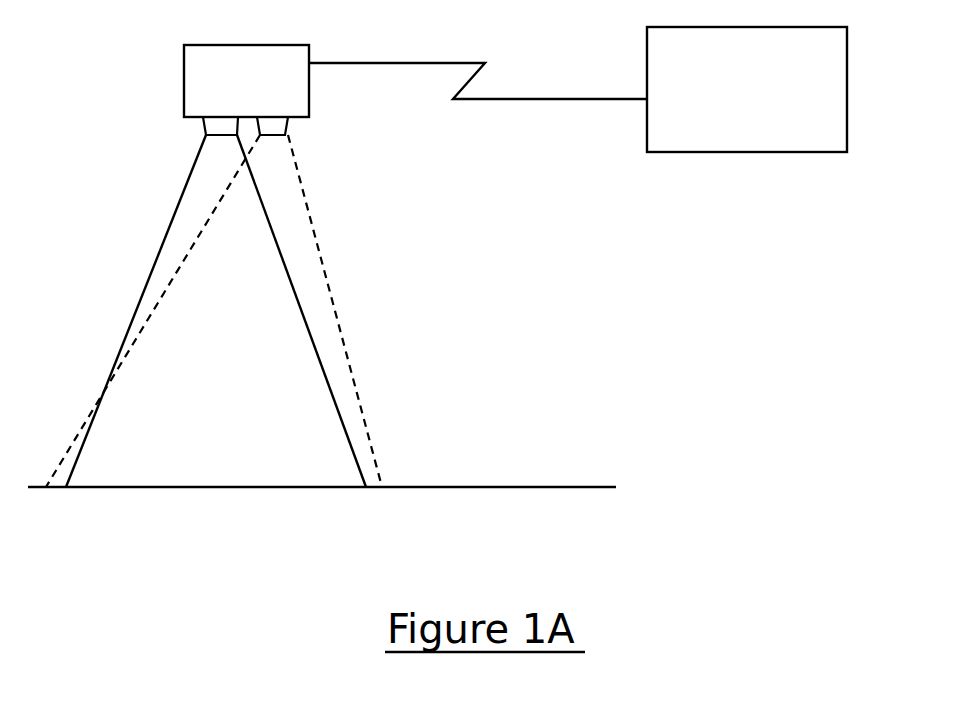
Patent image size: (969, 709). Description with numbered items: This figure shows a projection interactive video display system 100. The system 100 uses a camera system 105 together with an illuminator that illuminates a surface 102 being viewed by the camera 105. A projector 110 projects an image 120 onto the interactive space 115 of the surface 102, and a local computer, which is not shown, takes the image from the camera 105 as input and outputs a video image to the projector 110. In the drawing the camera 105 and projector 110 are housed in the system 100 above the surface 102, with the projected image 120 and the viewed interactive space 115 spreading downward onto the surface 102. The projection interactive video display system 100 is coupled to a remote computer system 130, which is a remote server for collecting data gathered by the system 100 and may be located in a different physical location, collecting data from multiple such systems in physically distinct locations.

The projection interactive video display system 100 is at (272, 83).
The surface 102 is at (357, 524).
The camera system 105 is at (288, 127).
The projector 110 is at (203, 125).
The interactive space 115 is at (332, 285).
The image 120 is at (150, 255).
The remote computer system 130 is at (772, 145).